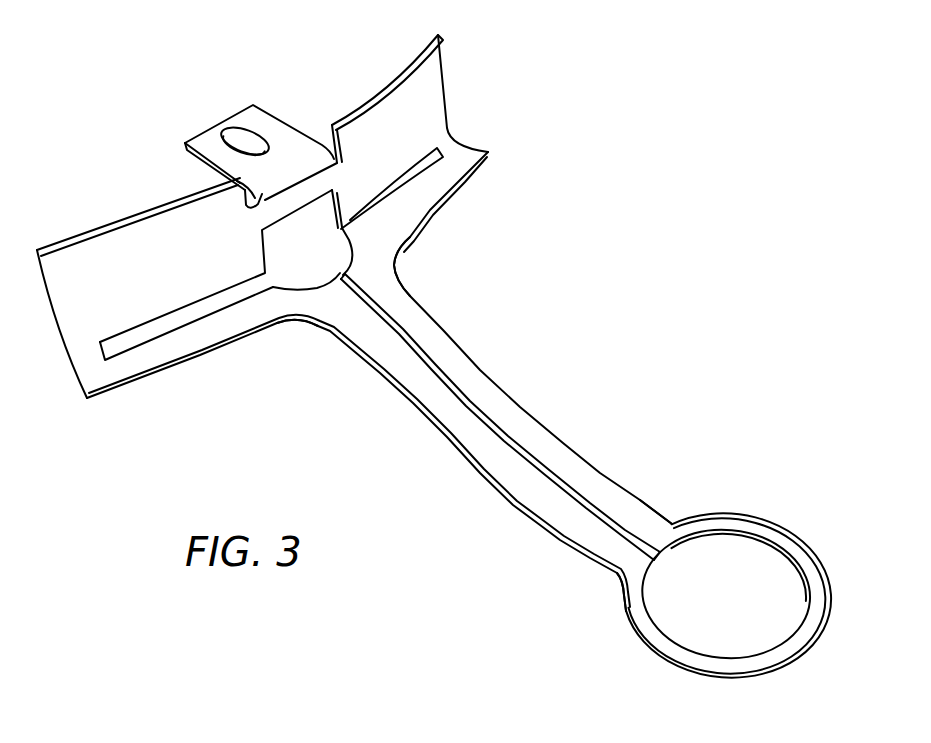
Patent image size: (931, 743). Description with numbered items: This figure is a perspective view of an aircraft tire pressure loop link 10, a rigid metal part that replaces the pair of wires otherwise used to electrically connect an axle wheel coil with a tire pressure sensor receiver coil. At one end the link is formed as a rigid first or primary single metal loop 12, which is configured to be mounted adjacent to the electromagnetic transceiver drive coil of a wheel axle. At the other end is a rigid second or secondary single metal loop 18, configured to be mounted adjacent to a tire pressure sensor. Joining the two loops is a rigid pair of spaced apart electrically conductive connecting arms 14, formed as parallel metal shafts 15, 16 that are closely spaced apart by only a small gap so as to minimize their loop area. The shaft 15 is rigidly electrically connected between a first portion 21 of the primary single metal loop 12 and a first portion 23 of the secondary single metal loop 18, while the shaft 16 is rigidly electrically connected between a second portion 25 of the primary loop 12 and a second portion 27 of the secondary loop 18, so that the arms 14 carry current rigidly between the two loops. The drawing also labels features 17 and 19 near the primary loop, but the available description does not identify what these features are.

The aircraft tire pressure loop link 10 is at (437, 345).
The first or primary single metal loop 12 is at (464, 72).
The pair of spaced apart electrically conductive connecting arms 14 is at (379, 381).
The metal shaft 15 is at (447, 352).
The metal shaft 16 is at (421, 395).
The tab 17 is at (238, 133).
The second or secondary single metal loop 18 is at (663, 575).
The hole 19 is at (232, 146).
The first portion of the first or primary single metal loop 21 is at (377, 262).
The first portion of the second or secondary single metal loop 23 is at (667, 540).
The second portion of the first or primary single metal loop 25 is at (310, 308).
The second portion of the second or secondary single metal loop 27 is at (637, 563).